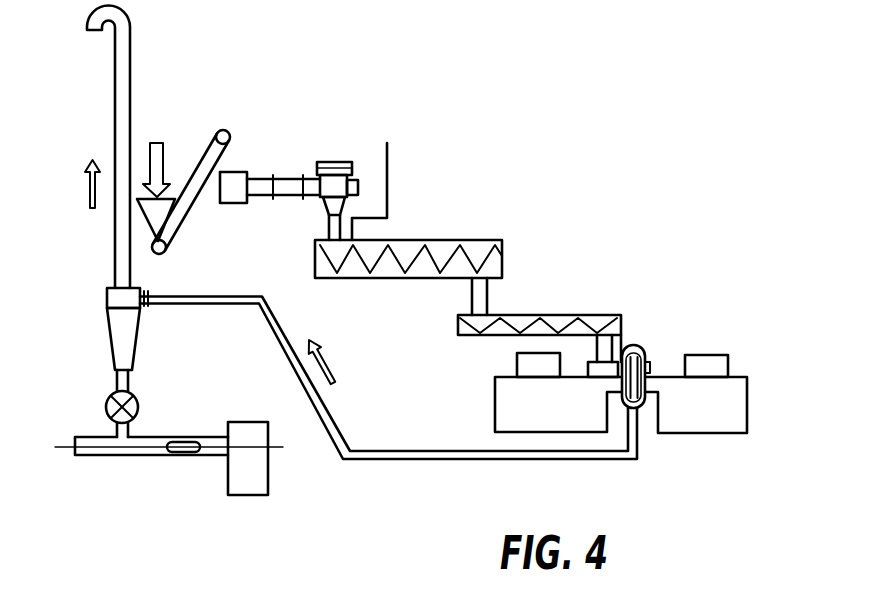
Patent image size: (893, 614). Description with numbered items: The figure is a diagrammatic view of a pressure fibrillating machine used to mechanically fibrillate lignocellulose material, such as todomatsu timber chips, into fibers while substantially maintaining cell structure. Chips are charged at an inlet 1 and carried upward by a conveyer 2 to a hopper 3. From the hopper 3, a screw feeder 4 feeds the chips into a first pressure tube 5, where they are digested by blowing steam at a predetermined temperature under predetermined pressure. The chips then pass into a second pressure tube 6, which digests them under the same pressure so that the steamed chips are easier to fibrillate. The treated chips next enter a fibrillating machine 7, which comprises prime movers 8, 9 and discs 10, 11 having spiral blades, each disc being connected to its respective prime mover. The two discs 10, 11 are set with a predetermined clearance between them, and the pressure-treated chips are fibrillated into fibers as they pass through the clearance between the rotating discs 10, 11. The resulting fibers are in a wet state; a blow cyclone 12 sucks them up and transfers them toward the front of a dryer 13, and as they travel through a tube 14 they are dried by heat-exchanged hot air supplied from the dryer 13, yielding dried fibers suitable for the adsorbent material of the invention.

The inlet 1 is at (182, 195).
The conveyer 2 is at (172, 237).
The hopper 3 is at (240, 170).
The screw feeder 4 is at (288, 180).
The first pressure tube 5 is at (445, 240).
The second pressure tube 6 is at (558, 315).
The fibrillating machine 7 is at (648, 348).
The prime mover 8 is at (515, 360).
The prime mover 9 is at (733, 355).
The disc 10 is at (632, 348).
The disc 11 is at (638, 348).
The blow cyclone 12 is at (105, 310).
The dryer 13 is at (268, 490).
The tube 14 is at (123, 458).